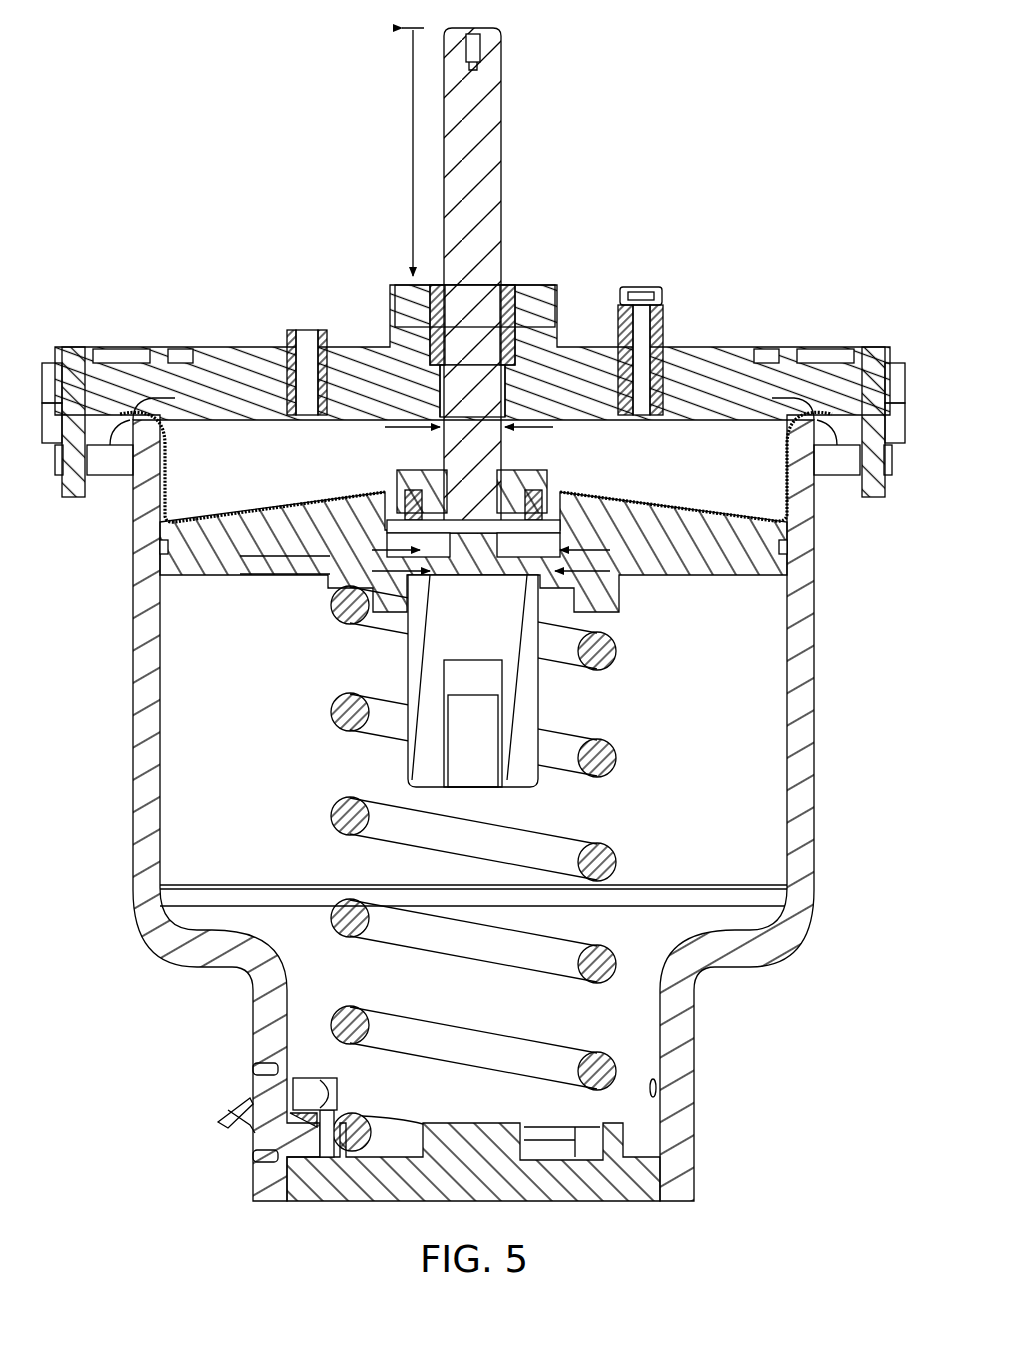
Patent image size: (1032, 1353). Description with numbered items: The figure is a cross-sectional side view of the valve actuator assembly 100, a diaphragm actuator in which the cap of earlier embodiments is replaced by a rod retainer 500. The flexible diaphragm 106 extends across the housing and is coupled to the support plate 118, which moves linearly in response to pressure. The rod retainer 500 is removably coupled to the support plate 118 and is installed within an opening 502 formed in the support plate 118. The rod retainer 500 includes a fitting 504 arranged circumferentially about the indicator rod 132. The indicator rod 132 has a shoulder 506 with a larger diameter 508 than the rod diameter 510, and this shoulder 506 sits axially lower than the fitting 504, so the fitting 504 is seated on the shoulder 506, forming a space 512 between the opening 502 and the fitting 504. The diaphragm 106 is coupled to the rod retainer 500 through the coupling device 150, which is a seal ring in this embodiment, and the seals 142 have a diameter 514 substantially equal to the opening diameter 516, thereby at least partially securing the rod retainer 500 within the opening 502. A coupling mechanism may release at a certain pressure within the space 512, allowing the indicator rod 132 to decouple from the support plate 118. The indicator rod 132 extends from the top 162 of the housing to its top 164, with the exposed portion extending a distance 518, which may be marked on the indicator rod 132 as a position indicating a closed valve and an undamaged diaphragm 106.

The valve actuator assembly 100 is at (473, 600).
The diaphragm 106 is at (730, 513).
The support plate 118 is at (727, 577).
The indicator rod 132 is at (514, 266).
The seals 142 is at (548, 512).
The coupling device 150 is at (566, 490).
The top of the housing 162 is at (530, 287).
The top of the indicator rod 164 is at (476, 34).
The rod retainer 500 is at (467, 465).
The opening 502 is at (430, 455).
The fitting 504 is at (545, 478).
The shoulder 506 is at (473, 666).
The larger diameter 508 is at (536, 560).
The rod diameter 510 is at (533, 424).
The space 512 is at (365, 550).
The seal diameter 514 is at (345, 500).
The opening diameter 516 is at (603, 565).
The distance 518 is at (411, 152).